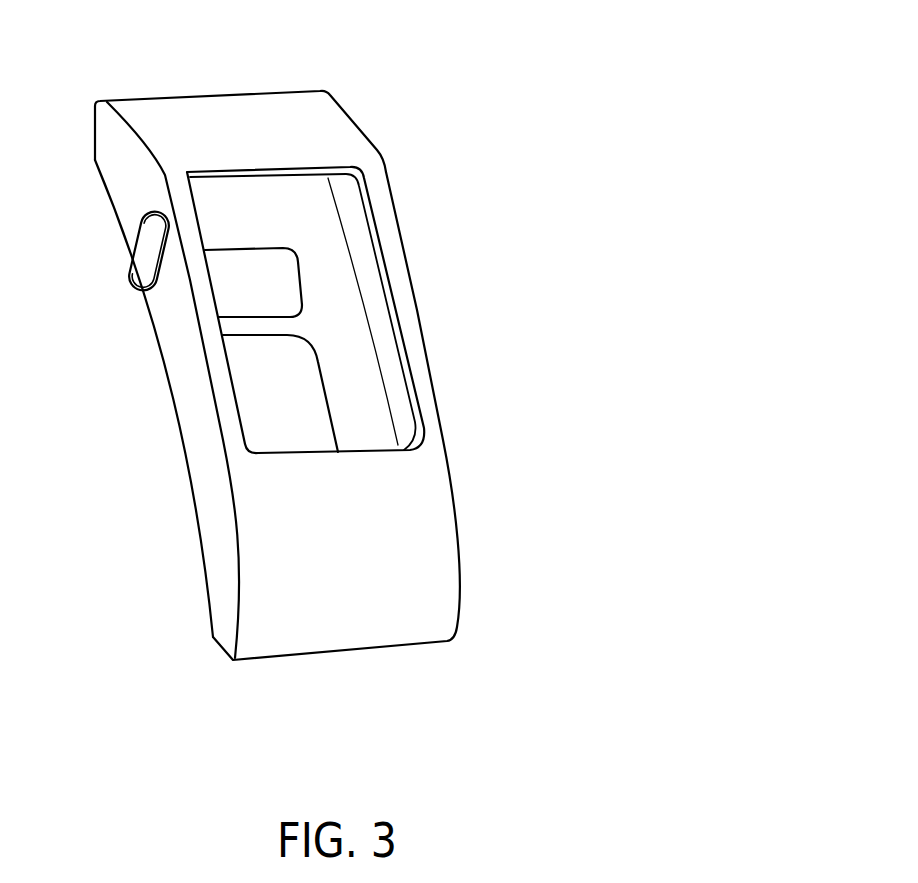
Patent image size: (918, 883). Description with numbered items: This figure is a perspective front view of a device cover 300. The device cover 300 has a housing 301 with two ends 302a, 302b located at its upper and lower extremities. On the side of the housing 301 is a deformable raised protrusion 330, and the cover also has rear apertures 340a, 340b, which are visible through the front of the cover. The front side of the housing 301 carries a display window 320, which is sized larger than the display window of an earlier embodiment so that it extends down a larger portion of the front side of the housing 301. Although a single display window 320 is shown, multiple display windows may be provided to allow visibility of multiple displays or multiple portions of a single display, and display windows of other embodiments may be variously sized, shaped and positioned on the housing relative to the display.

The device cover 300 is at (299, 351).
The housing 301 is at (280, 143).
The end 302a is at (337, 97).
The end 302b is at (462, 638).
The display window 320 is at (370, 207).
The deformable raised protrusion 330 is at (140, 240).
The rear aperture 340a is at (310, 288).
The rear aperture 340b is at (333, 382).